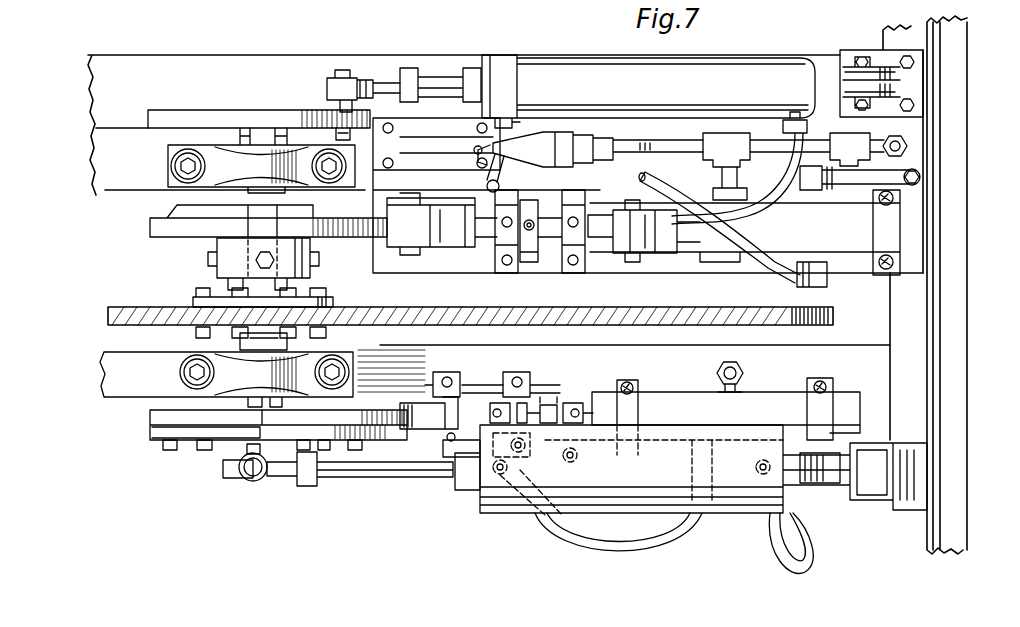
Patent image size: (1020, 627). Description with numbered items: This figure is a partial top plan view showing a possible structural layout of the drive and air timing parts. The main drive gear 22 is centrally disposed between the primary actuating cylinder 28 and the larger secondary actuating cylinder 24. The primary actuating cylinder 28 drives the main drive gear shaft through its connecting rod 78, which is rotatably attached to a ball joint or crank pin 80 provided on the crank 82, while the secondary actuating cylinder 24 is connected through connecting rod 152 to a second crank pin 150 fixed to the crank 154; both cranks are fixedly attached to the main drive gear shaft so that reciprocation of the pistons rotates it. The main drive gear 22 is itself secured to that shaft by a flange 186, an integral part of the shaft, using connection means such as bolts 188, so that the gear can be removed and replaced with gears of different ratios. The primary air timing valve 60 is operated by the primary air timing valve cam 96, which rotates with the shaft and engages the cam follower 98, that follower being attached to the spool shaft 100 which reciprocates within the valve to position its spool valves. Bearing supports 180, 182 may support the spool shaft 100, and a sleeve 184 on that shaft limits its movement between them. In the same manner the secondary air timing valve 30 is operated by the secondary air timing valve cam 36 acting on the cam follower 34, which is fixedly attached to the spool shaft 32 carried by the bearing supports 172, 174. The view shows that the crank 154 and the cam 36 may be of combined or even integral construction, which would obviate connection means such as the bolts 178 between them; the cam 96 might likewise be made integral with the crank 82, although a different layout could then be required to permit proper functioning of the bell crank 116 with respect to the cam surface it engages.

The main drive gear 22 is at (695, 318).
The secondary actuating cylinder 24 is at (503, 500).
The primary actuating cylinder 28 is at (562, 70).
The secondary air timing valve 30 is at (770, 400).
The spool shaft 32 is at (477, 392).
The cam follower 34 is at (425, 420).
The secondary air timing valve cam 36 is at (152, 420).
The primary air timing valve 60 is at (856, 233).
The connecting rod 78 is at (452, 78).
The crank pin 80 is at (336, 72).
The crank 82 is at (197, 118).
The primary air timing valve cam 96 is at (165, 228).
The cam follower 98 is at (433, 226).
The spool shaft 100 is at (549, 207).
The bell crank 116 is at (388, 165).
The crank pin 150 is at (252, 484).
The connecting rod 152 is at (345, 470).
The crank 154 is at (158, 440).
The bearing support 172 is at (538, 240).
The bearing support 174 is at (533, 394).
The bolts 178 is at (203, 450).
The bearing support 180 is at (503, 238).
The bearing support 182 is at (585, 240).
The sleeve 184 is at (540, 242).
The flange 186 is at (330, 303).
The bolts 188 is at (196, 290).